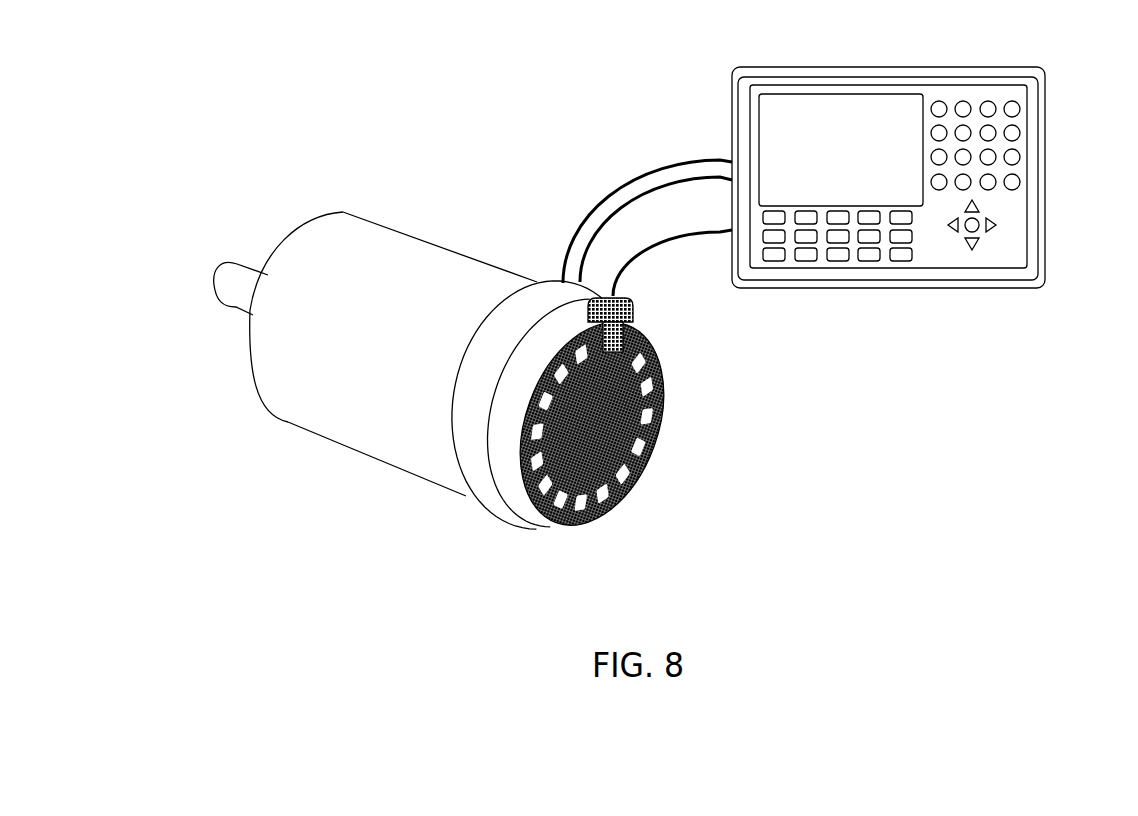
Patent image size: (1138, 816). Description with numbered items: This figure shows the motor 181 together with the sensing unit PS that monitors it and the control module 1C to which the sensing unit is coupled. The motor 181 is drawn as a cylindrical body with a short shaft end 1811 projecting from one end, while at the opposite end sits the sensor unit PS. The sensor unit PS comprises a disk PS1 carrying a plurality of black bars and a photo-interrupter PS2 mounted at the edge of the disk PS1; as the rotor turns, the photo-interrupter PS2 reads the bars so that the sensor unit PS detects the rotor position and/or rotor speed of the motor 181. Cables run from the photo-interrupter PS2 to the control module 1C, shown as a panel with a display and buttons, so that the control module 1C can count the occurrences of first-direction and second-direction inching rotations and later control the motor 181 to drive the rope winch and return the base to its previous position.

The motor 181 is at (298, 398).
The shaft 1811 is at (250, 284).
The sensor unit PS is at (680, 352).
The disk PS1 is at (655, 425).
The photo-interrupter PS2 is at (633, 312).
The control module 1C is at (1041, 292).